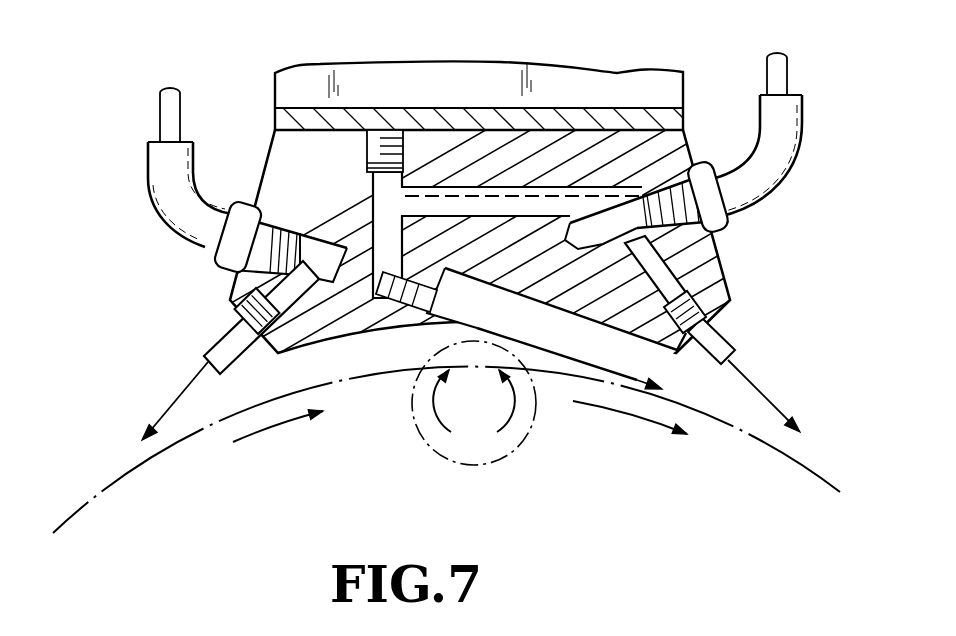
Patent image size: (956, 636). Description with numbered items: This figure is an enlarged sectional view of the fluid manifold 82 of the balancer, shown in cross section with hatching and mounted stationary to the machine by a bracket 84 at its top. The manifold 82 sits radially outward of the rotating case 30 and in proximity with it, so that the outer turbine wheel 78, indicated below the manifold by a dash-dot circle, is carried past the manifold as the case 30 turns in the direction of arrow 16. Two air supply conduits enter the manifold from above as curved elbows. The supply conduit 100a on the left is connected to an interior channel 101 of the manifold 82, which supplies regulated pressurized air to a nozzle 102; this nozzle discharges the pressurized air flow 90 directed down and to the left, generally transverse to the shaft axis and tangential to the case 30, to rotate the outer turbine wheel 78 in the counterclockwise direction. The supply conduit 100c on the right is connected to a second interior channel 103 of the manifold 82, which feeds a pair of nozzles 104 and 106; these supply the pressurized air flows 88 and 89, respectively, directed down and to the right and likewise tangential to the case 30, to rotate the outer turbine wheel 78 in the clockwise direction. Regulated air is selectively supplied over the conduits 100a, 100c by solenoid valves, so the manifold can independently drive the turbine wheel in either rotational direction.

The bracket 84 is at (378, 62).
The manifold 82 is at (268, 150).
The air supply conduit 100a is at (160, 100).
The air supply conduit 100c is at (790, 78).
The interior channel 101 is at (224, 272).
The nozzle 102 is at (222, 338).
The interior channel 103 is at (697, 252).
The nozzle 104 is at (480, 305).
The nozzle 106 is at (725, 345).
The outer turbine wheel 78 is at (425, 432).
The case 30 is at (90, 503).
The arrow indicating first rotational direction 16 is at (306, 417).
The air flow arrow 88 is at (642, 372).
The air flow arrow 89 is at (777, 402).
The air flow arrow 90 is at (193, 387).